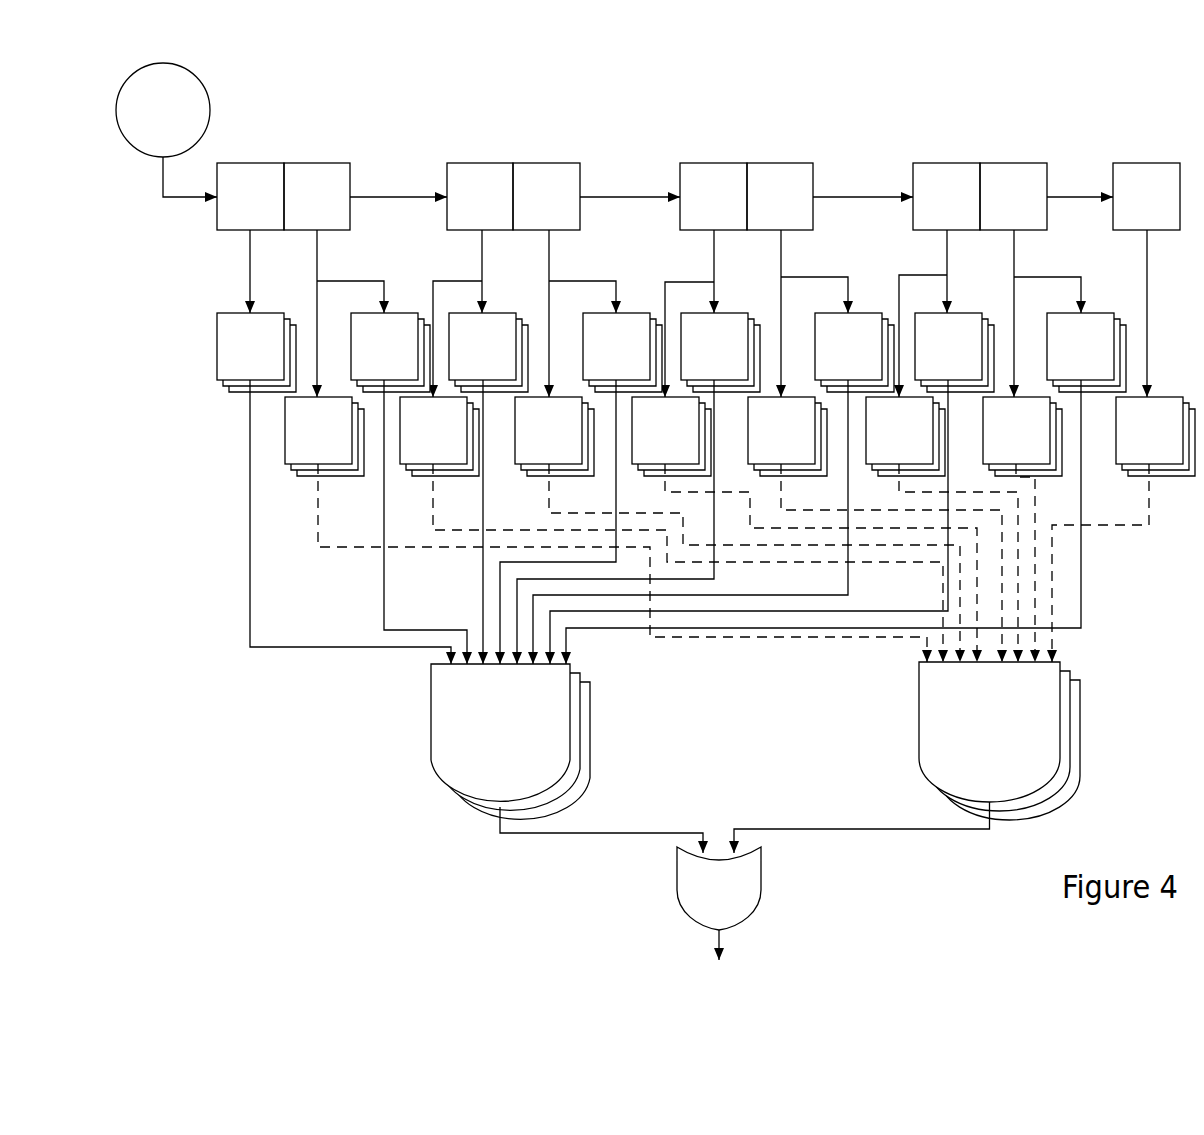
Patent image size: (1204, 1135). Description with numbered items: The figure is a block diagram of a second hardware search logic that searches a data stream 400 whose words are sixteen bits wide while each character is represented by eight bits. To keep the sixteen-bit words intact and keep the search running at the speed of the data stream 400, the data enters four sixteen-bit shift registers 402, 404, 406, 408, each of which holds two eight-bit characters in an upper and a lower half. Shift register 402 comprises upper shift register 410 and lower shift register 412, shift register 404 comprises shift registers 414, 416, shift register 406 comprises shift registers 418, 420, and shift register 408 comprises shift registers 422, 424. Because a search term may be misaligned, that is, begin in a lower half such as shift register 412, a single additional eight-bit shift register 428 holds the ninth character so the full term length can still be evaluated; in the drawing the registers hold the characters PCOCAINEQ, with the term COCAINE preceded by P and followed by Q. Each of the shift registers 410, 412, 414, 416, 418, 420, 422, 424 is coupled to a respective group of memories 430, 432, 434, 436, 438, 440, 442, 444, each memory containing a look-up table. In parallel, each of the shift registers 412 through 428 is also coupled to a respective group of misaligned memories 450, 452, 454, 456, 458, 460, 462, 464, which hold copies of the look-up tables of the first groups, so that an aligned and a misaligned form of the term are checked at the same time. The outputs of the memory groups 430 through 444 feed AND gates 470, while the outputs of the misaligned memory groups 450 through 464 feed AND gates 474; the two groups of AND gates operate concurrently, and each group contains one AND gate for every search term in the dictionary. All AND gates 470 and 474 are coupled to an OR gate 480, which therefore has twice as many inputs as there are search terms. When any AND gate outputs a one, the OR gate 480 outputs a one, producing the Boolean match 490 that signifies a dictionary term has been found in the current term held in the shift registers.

The data stream 400 is at (166, 130).
The shift register 402 is at (332, 244).
The shift register 404 is at (556, 244).
The shift register 406 is at (789, 244).
The shift register 408 is at (1006, 244).
The shift register 410 is at (229, 163).
The shift register 412 is at (316, 163).
The shift register 414 is at (460, 163).
The shift register 416 is at (547, 163).
The shift register 418 is at (695, 163).
The shift register 420 is at (780, 163).
The shift register 422 is at (928, 163).
The shift register 424 is at (1013, 163).
The additional eight bit shift register 428 is at (1145, 163).
The group of memories 430 is at (334, 488).
The group of memories 432 is at (409, 488).
The group of memories 434 is at (488, 488).
The group of memories 436 is at (581, 488).
The group of memories 438 is at (638, 488).
The group of memories 440 is at (713, 488).
The group of memories 442 is at (772, 488).
The group of memories 444 is at (846, 488).
The group of misaligned memories 450 is at (606, 529).
The group of misaligned memories 452 is at (671, 529).
The group of misaligned memories 454 is at (737, 529).
The group of misaligned memories 456 is at (804, 529).
The group of misaligned memories 458 is at (875, 529).
The group of misaligned memories 460 is at (942, 529).
The group of misaligned memories 462 is at (1022, 529).
The group of misaligned memories 464 is at (1123, 529).
The AND gates 470 is at (431, 733).
The AND gates 474 is at (919, 731).
The OR gate 480 is at (677, 888).
The match 490 is at (723, 941).